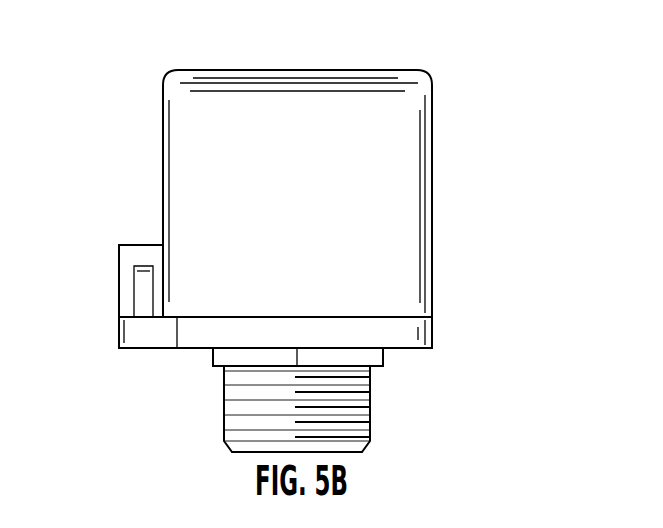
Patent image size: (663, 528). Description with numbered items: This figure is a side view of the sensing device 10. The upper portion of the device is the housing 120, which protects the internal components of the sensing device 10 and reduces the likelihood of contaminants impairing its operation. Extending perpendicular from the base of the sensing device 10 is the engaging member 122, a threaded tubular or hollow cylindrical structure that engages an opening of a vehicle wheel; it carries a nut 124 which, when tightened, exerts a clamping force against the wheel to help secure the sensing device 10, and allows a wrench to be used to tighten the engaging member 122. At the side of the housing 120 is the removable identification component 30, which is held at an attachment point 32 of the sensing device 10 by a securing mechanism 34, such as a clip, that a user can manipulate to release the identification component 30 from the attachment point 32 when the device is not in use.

The sensing device 10 is at (493, 107).
The housing 120 is at (175, 123).
The identification component 30 is at (119, 268).
The securing mechanism 34 is at (153, 293).
The attachment point 32 is at (119, 335).
The nut 124 is at (383, 354).
The engaging member 122 is at (372, 408).